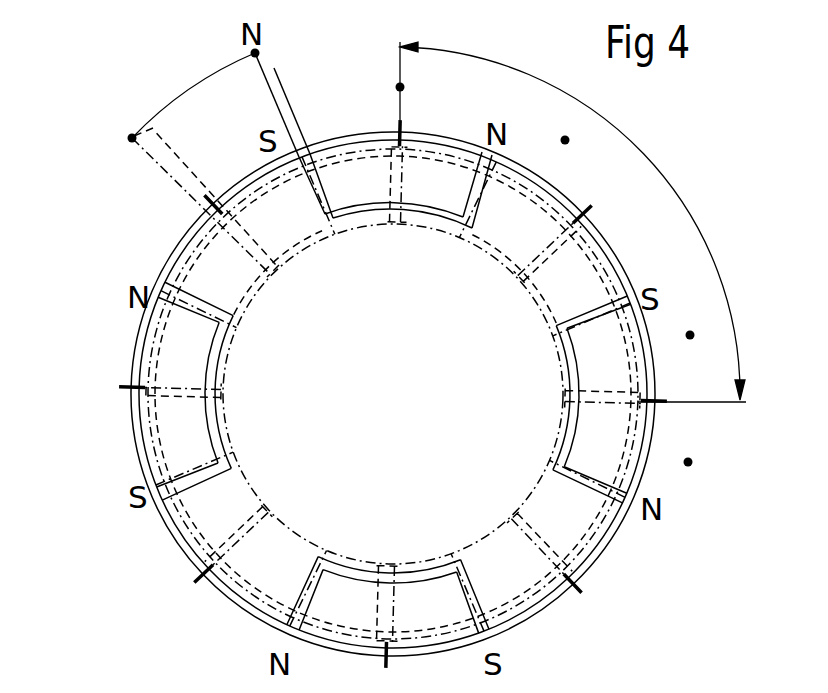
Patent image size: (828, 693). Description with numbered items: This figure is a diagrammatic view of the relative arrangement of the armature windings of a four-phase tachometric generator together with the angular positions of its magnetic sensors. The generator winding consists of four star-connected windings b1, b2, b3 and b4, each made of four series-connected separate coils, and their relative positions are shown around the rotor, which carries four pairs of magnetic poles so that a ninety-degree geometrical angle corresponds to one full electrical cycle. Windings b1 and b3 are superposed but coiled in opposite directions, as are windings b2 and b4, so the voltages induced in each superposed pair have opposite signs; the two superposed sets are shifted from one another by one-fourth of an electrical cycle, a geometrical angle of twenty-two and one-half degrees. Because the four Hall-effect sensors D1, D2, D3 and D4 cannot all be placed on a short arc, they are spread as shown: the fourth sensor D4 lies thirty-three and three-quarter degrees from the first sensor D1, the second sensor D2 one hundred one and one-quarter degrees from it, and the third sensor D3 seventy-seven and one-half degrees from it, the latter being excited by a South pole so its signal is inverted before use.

The winding b1 is at (200, 176).
The winding b2 is at (285, 89).
The winding b3 is at (170, 183).
The winding b4 is at (272, 100).
The magnetic sensor D1 is at (417, 91).
The magnetic sensor D2 is at (705, 447).
The magnetic sensor D3 is at (686, 352).
The magnetic sensor D4 is at (581, 157).